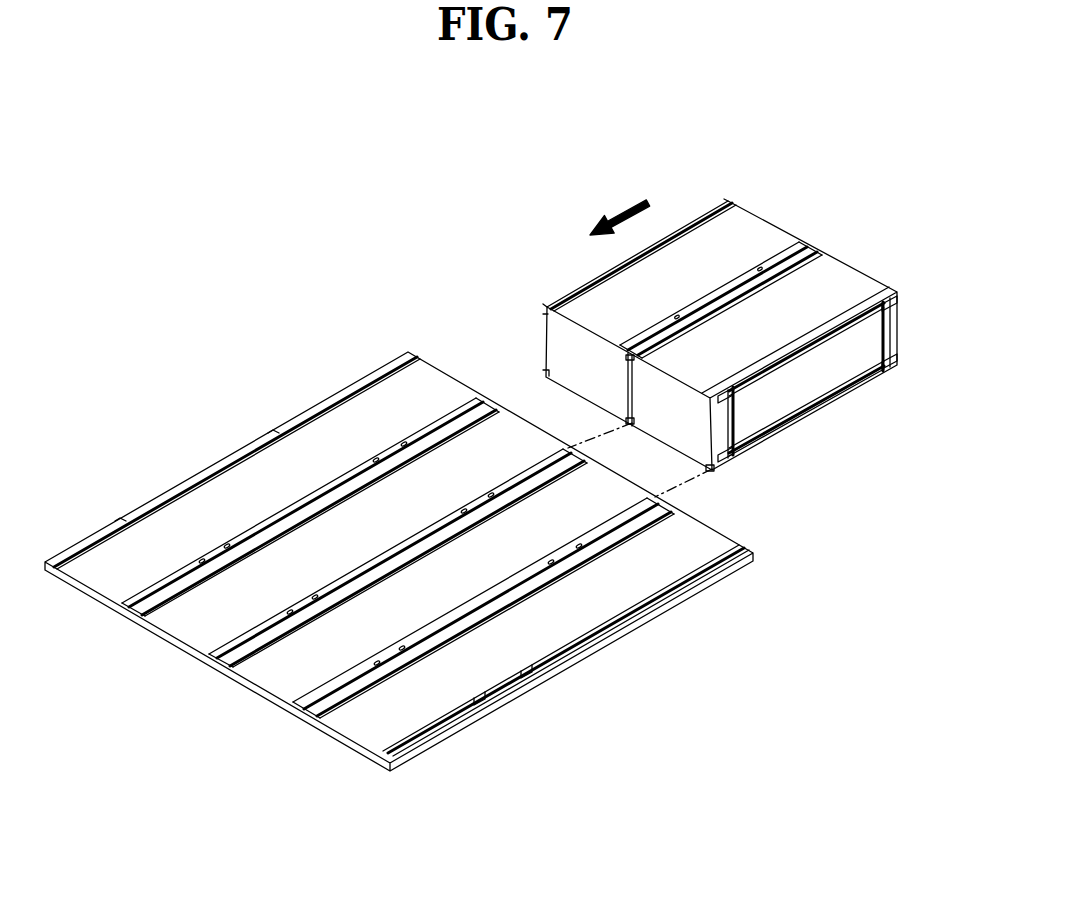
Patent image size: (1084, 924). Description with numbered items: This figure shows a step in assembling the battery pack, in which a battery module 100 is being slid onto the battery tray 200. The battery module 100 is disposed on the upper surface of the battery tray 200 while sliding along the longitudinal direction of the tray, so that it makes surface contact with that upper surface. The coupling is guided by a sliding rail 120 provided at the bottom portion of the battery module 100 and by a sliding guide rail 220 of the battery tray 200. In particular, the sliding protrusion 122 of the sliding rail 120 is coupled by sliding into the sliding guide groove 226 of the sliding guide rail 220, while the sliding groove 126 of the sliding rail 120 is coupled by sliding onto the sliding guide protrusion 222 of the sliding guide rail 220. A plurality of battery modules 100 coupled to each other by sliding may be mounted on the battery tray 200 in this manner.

The battery module 100 is at (781, 212).
The sliding rail 120 is at (898, 290).
The sliding protrusion 122 is at (637, 424).
The sliding groove 126 is at (709, 472).
The battery tray 200 is at (181, 436).
The sliding guide rail 220 is at (296, 716).
The sliding guide protrusion 222 is at (215, 655).
The sliding guide groove 226 is at (139, 616).